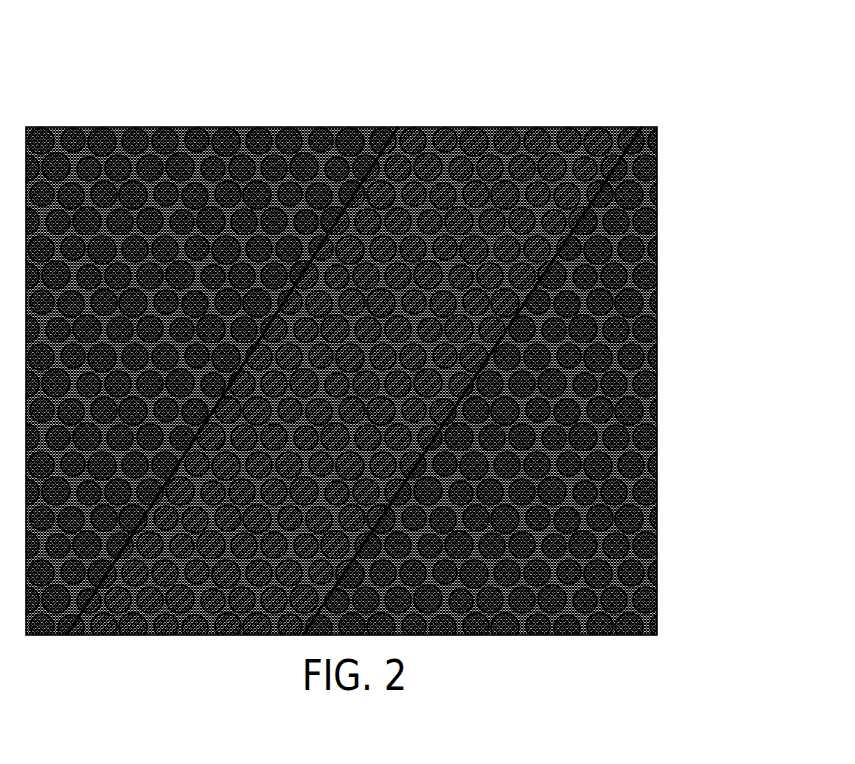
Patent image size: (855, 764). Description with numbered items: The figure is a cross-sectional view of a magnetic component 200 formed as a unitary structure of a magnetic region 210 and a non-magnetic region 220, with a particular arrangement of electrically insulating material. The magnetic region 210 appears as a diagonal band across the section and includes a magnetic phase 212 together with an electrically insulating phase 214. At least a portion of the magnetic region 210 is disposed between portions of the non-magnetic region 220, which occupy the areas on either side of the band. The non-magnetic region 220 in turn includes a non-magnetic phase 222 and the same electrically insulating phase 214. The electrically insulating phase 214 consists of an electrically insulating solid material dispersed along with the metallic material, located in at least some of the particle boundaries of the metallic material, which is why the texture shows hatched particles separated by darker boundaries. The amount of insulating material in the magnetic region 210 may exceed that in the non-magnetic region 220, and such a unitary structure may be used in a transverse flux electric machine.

The magnetic component 200 is at (386, 317).
The magnetic region 210 is at (566, 122).
The magnetic phase 212 is at (437, 126).
The electrically insulating phase 214 is at (386, 351).
The non-magnetic region 220 is at (141, 124).
The non-magnetic phase 222 is at (658, 228).